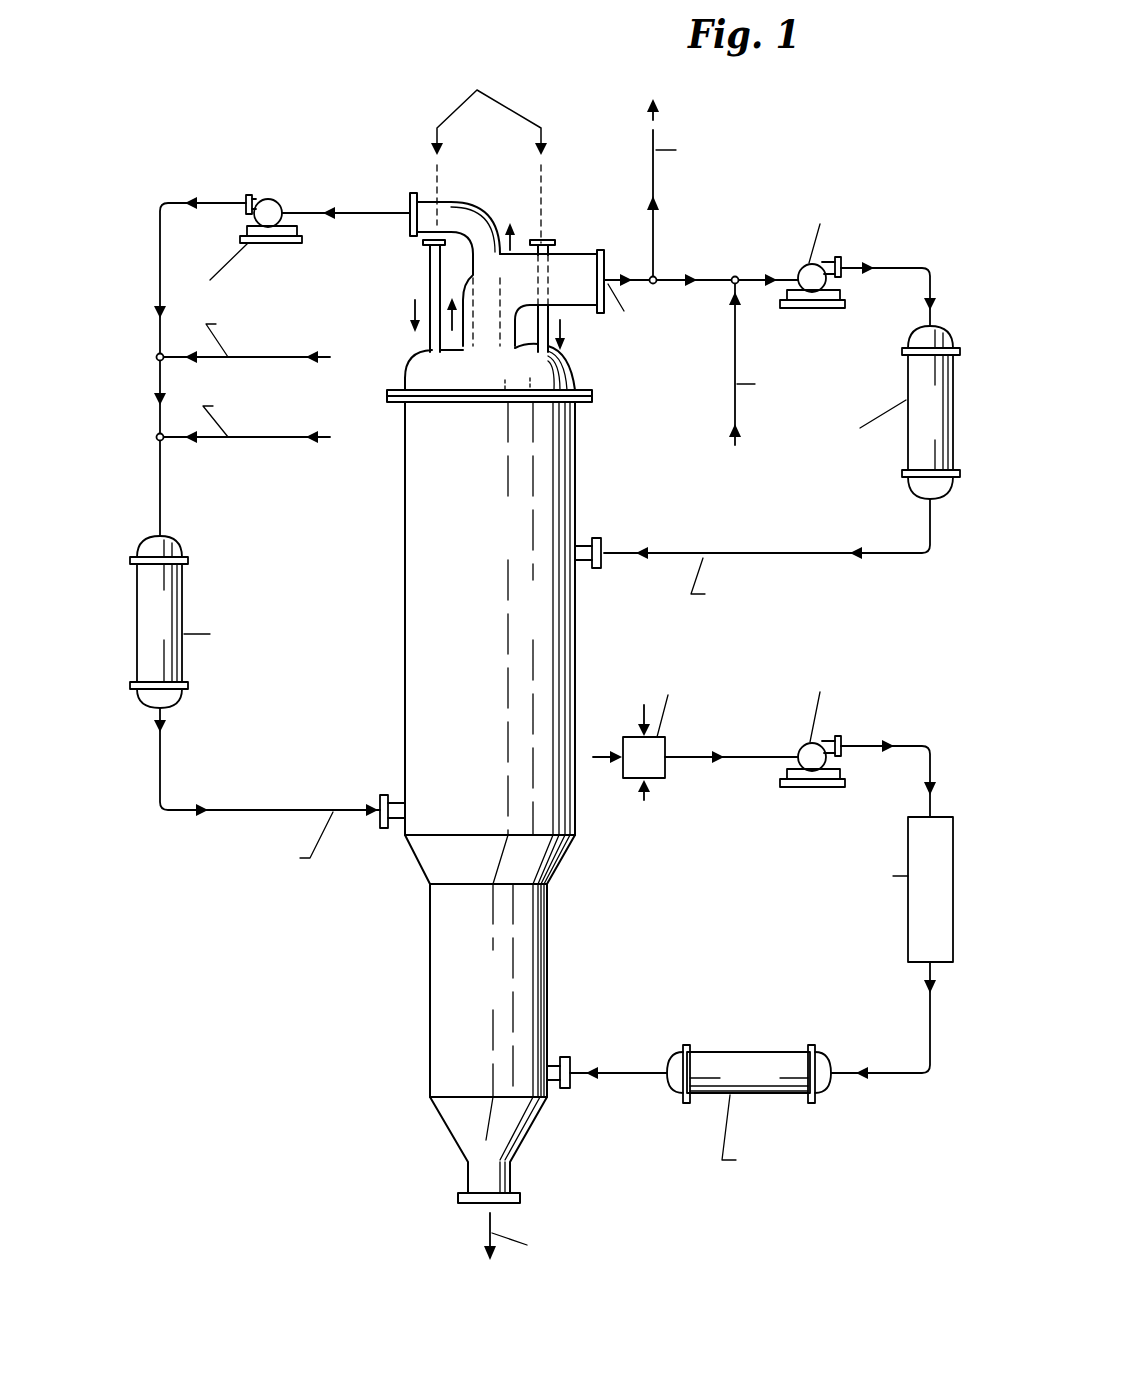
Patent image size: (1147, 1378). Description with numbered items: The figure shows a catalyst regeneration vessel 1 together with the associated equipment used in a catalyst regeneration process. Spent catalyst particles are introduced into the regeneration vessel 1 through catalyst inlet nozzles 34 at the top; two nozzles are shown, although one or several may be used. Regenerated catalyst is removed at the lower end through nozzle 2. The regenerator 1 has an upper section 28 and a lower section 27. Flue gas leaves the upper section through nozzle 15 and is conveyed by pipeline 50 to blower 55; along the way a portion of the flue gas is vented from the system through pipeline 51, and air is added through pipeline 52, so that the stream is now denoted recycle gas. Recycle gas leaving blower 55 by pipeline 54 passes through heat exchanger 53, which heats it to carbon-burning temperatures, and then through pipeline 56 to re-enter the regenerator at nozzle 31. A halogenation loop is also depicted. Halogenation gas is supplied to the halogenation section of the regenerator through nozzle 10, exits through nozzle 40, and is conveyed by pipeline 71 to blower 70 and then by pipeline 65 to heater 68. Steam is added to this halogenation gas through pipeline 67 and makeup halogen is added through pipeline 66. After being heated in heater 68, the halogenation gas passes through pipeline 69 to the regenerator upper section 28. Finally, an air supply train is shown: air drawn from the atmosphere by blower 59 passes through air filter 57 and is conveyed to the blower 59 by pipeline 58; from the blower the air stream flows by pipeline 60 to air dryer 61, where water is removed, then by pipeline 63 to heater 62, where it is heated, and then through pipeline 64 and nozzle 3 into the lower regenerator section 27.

The regeneration vessel 1 is at (502, 661).
The nozzle 2 is at (468, 1182).
The nozzle 3 is at (560, 1057).
The nozzle 10 is at (386, 795).
The nozzle 15 is at (597, 250).
The lower section 27 is at (548, 931).
The upper section 28 is at (405, 576).
The nozzle 31 is at (598, 540).
The catalyst inlet nozzles 34 is at (410, 272).
The nozzle 40 is at (478, 180).
The pipeline 50 is at (640, 276).
The pipeline 51 is at (657, 228).
The pipeline 52 is at (735, 408).
The heat exchanger 53 is at (907, 385).
The pipeline 54 is at (928, 317).
The blower 55 is at (828, 258).
The pipeline 56 is at (765, 553).
The air filter 57 is at (623, 777).
The pipeline 58 is at (688, 757).
The blower 59 is at (827, 741).
The pipeline 60 is at (928, 806).
The air dryer 61 is at (908, 916).
The heater 62 is at (740, 1052).
The pipeline 63 is at (882, 1068).
The pipeline 64 is at (620, 1076).
The pipeline 65 is at (176, 204).
The pipeline 66 is at (291, 362).
The pipeline 67 is at (256, 440).
The heater 68 is at (184, 585).
The pipeline 69 is at (217, 810).
The blower 70 is at (293, 172).
The pipeline 71 is at (366, 212).